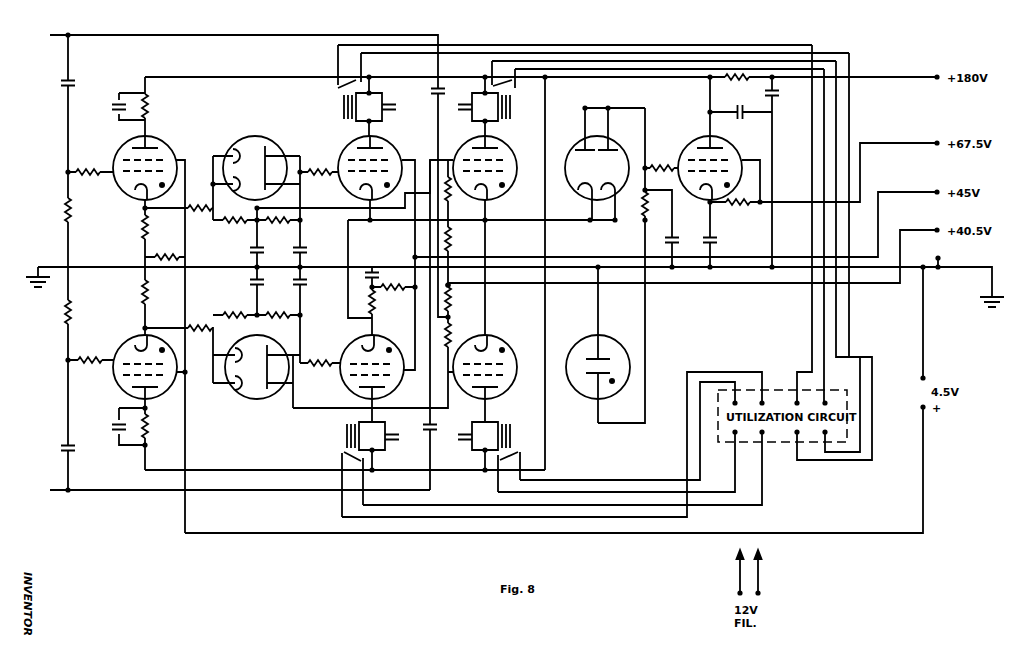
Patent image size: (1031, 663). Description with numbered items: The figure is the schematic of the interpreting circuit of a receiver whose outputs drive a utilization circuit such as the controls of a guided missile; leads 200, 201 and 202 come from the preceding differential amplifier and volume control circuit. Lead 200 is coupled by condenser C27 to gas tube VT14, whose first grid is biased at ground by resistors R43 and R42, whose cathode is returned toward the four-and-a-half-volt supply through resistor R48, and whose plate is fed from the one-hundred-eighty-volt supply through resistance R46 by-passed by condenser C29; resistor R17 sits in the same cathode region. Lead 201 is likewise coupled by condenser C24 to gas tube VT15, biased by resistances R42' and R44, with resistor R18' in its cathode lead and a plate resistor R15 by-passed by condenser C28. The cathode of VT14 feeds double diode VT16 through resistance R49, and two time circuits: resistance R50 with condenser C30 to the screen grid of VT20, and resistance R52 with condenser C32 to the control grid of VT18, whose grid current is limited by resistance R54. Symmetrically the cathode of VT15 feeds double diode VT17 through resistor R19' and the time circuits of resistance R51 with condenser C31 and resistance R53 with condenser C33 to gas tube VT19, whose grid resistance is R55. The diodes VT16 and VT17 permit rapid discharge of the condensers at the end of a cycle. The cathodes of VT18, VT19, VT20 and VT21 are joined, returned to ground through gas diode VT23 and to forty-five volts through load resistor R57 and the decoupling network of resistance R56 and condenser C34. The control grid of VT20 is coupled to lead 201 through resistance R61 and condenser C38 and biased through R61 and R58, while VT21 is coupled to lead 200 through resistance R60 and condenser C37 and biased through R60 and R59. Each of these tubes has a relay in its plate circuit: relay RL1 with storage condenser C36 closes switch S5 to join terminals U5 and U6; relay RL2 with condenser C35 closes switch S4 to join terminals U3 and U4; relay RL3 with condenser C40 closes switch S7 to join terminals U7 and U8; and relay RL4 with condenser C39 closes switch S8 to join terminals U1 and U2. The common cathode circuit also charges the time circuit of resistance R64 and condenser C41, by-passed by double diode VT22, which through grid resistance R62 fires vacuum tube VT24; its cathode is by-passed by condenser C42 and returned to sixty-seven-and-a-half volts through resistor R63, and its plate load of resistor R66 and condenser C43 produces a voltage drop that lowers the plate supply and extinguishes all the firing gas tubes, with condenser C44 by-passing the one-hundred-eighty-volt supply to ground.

The lead 200 is at (229, 173).
The lead 201 is at (224, 491).
The lead 202 is at (507, 284).
The condenser C27 is at (79, 78).
The condenser C29 is at (116, 106).
The resistance R46 is at (158, 106).
The gas tube VT14 is at (152, 165).
The resistor R43 is at (89, 165).
The resistor R42 is at (82, 210).
The resistor R48 is at (134, 223).
The resistor R17 is at (165, 251).
The resistance R49 is at (199, 200).
The double diode VT16 is at (261, 164).
The resistance R50 is at (235, 227).
The resistance R52 is at (278, 227).
The condenser C30 is at (245, 250).
The condenser C32 is at (311, 250).
The resistance R54 is at (319, 164).
The gas tube VT18 is at (378, 165).
The relay RL1 is at (350, 107).
The condenser C36 is at (401, 108).
The switch S5 is at (349, 66).
The condenser C37 is at (428, 85).
The gas tube VT20 is at (494, 165).
The relay RL3 is at (504, 107).
The capacitor C40 is at (454, 108).
The switch S7 is at (503, 74).
The resistance R61 is at (461, 190).
The resistance R58 is at (462, 240).
The resistance R59 is at (462, 299).
The resistance R60 is at (462, 335).
The condenser C38 is at (420, 422).
The condenser C34 is at (384, 276).
The resistance R56 is at (393, 294).
The load resistor R57 is at (361, 302).
The gas tube VT19 is at (378, 363).
The resistance R55 is at (320, 356).
The relay RL2 is at (351, 436).
The condenser C35 is at (404, 442).
The switch S4 is at (352, 484).
The gas tube VT21 is at (492, 363).
The relay RL4 is at (504, 436).
The capacitor C39 is at (455, 442).
The switch S8 is at (509, 472).
The gas tube VT15 is at (145, 364).
The resistor R18' is at (133, 292).
The resistor R19' is at (199, 321).
The resistance R42' is at (84, 316).
The resistance R44 is at (89, 368).
The resistance R51 is at (235, 308).
The resistance R53 is at (278, 308).
The condenser C31 is at (245, 283).
The condenser C33 is at (311, 283).
The double diode VT17 is at (257, 362).
The condenser C28 is at (118, 426).
The resistor R15 is at (159, 426).
The condenser C24 is at (80, 448).
The double diode VT22 is at (604, 165).
The resistance R64 is at (658, 204).
The resistance R62 is at (661, 160).
The condenser C41 is at (682, 246).
The vacuum tube VT24 is at (716, 165).
The condenser C43 is at (729, 107).
The condenser C44 is at (783, 99).
The resistor R66 is at (737, 85).
The resistor R63 is at (735, 209).
The condenser C42 is at (721, 246).
The gas diode VT23 is at (601, 363).
The terminal U1 is at (730, 433).
The terminal U2 is at (730, 398).
The terminal U3 is at (757, 433).
The terminal U4 is at (757, 398).
The terminal U5 is at (792, 433).
The terminal U6 is at (792, 398).
The terminal U7 is at (819, 433).
The terminal U8 is at (819, 398).